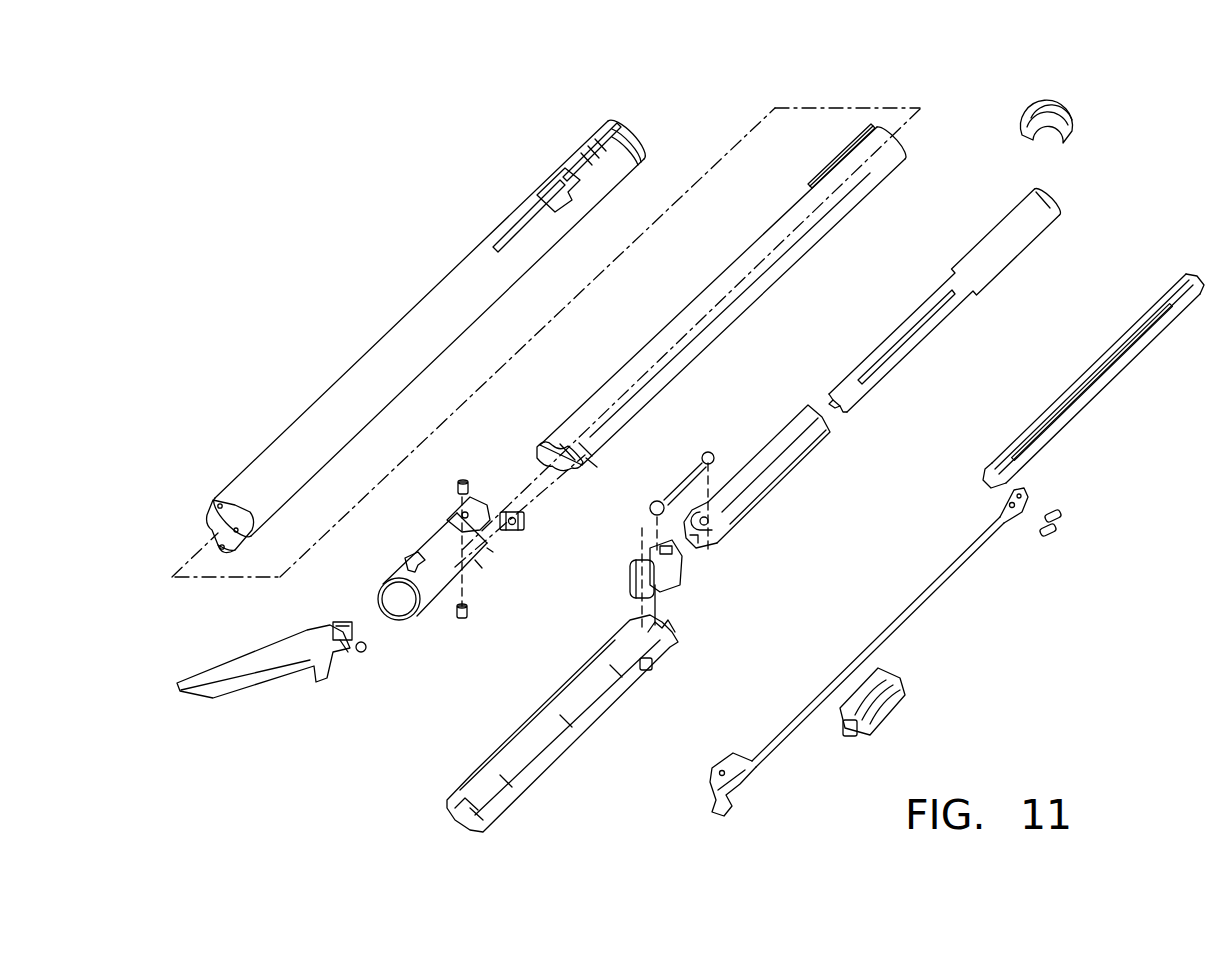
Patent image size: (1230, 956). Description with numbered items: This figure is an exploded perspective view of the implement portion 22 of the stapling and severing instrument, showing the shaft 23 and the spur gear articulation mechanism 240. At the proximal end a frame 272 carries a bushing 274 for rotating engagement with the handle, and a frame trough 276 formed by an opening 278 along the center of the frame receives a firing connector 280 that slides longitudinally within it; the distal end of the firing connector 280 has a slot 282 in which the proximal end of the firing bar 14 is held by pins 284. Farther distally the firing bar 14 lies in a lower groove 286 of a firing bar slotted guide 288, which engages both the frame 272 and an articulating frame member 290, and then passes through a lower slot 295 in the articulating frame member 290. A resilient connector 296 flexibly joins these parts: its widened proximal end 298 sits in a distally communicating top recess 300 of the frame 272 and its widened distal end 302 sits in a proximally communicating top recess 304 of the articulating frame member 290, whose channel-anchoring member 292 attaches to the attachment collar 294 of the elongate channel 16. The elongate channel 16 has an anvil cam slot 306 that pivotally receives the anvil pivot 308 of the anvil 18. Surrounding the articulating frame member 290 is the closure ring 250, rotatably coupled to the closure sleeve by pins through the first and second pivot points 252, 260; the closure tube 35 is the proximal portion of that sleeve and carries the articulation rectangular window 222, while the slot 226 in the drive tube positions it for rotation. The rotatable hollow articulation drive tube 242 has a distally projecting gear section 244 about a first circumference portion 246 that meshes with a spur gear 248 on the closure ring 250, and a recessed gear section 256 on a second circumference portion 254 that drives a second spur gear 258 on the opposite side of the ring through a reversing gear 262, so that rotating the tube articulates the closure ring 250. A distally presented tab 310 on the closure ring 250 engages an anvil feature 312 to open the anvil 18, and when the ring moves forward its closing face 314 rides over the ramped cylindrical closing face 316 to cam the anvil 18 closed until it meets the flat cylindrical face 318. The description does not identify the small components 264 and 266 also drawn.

The firing bar 14 is at (923, 620).
The elongate channel 16 is at (573, 737).
The anvil 18 is at (237, 663).
The implement portion 22 is at (350, 172).
The shaft 23 is at (402, 244).
The closure tube 35 is at (286, 402).
The articulation rectangular window 222 is at (548, 210).
The slot 226 is at (840, 172).
The spur gear articulation mechanism 240 is at (533, 543).
The rotatable hollow articulation drive tube 242 is at (652, 403).
The distally projecting gear section 244 is at (537, 447).
The first circumference portion 246 is at (575, 440).
The spur gear 248 is at (473, 513).
The closure ring 250 is at (425, 545).
The first pivot point 252 is at (208, 510).
The second circumference portion 254 is at (590, 452).
The recessed distally projecting gear section 256 is at (572, 472).
The second spur gear 258 is at (487, 550).
The second pivot point 260 is at (220, 553).
The reversing gear 262 is at (510, 512).
The bracket 264 is at (450, 520).
The pin 266 is at (477, 567).
The frame 272 is at (887, 390).
The bushing 274 is at (1080, 113).
The frame trough 276 is at (887, 340).
The opening 278 is at (852, 383).
The firing connector 280 is at (1065, 443).
The slot 282 is at (1000, 457).
The pins 284 is at (1067, 520).
The lower groove 286 is at (845, 733).
The firing bar slotted guide 288 is at (900, 697).
The articulating frame member 290 is at (660, 573).
The channel-anchoring member 292 is at (657, 597).
The attachment collar 294 is at (653, 627).
The lower slot 295 is at (632, 597).
The resilient connector 296 is at (680, 487).
The widened proximal end 298 is at (707, 453).
The distally communicating top recess 300 is at (727, 513).
The widened distal end 302 is at (650, 510).
The proximally communicating top recess 304 is at (660, 557).
The anvil cam slot 306 is at (648, 663).
The anvil pivot 308 is at (363, 647).
The distally presented tab 310 is at (405, 562).
The anvil feature 312 is at (345, 627).
The distally presented closing face 314 is at (410, 623).
The ramped cylindrical closing face 316 is at (333, 628).
The flat cylindrical face 318 is at (343, 650).